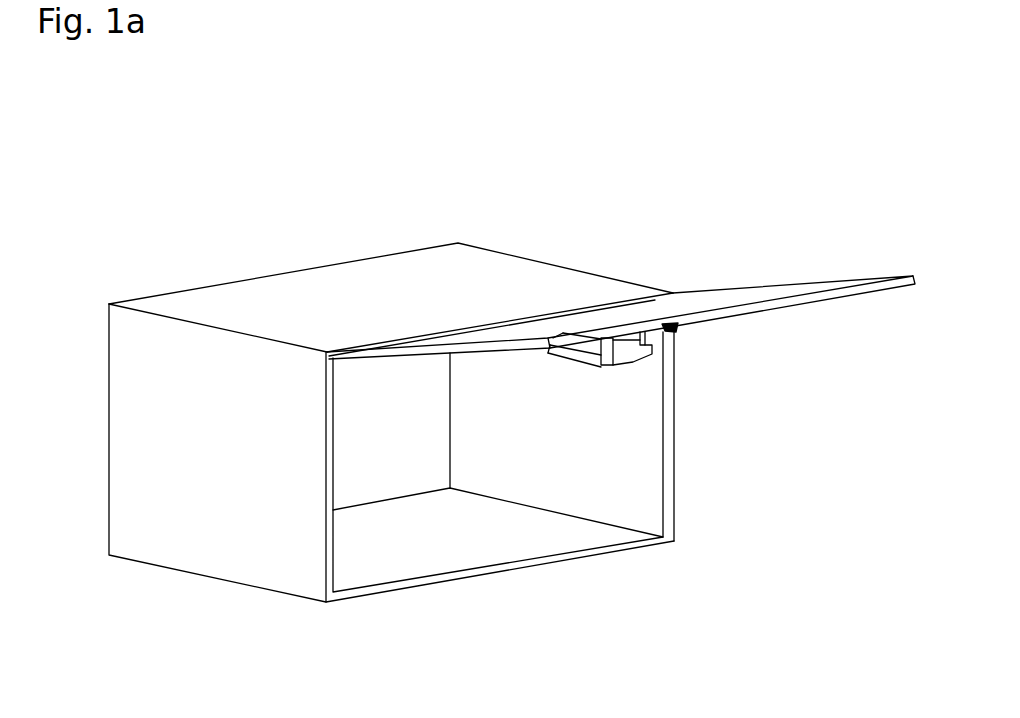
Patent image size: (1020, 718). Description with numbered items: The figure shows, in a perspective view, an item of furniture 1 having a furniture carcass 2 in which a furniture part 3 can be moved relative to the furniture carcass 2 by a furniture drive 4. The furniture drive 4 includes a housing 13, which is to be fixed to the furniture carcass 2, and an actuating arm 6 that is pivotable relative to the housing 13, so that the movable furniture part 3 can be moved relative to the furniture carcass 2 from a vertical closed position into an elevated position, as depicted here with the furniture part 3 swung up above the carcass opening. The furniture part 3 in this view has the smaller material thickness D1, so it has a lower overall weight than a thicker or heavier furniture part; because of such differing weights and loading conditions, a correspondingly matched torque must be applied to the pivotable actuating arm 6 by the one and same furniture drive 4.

The item of furniture 1 is at (510, 454).
The furniture carcass 2 is at (237, 563).
The furniture part 3 is at (880, 283).
The furniture drive 4 is at (580, 374).
The actuating arm 6 is at (673, 330).
The housing 13 is at (553, 347).
The material thickness D1 is at (757, 265).